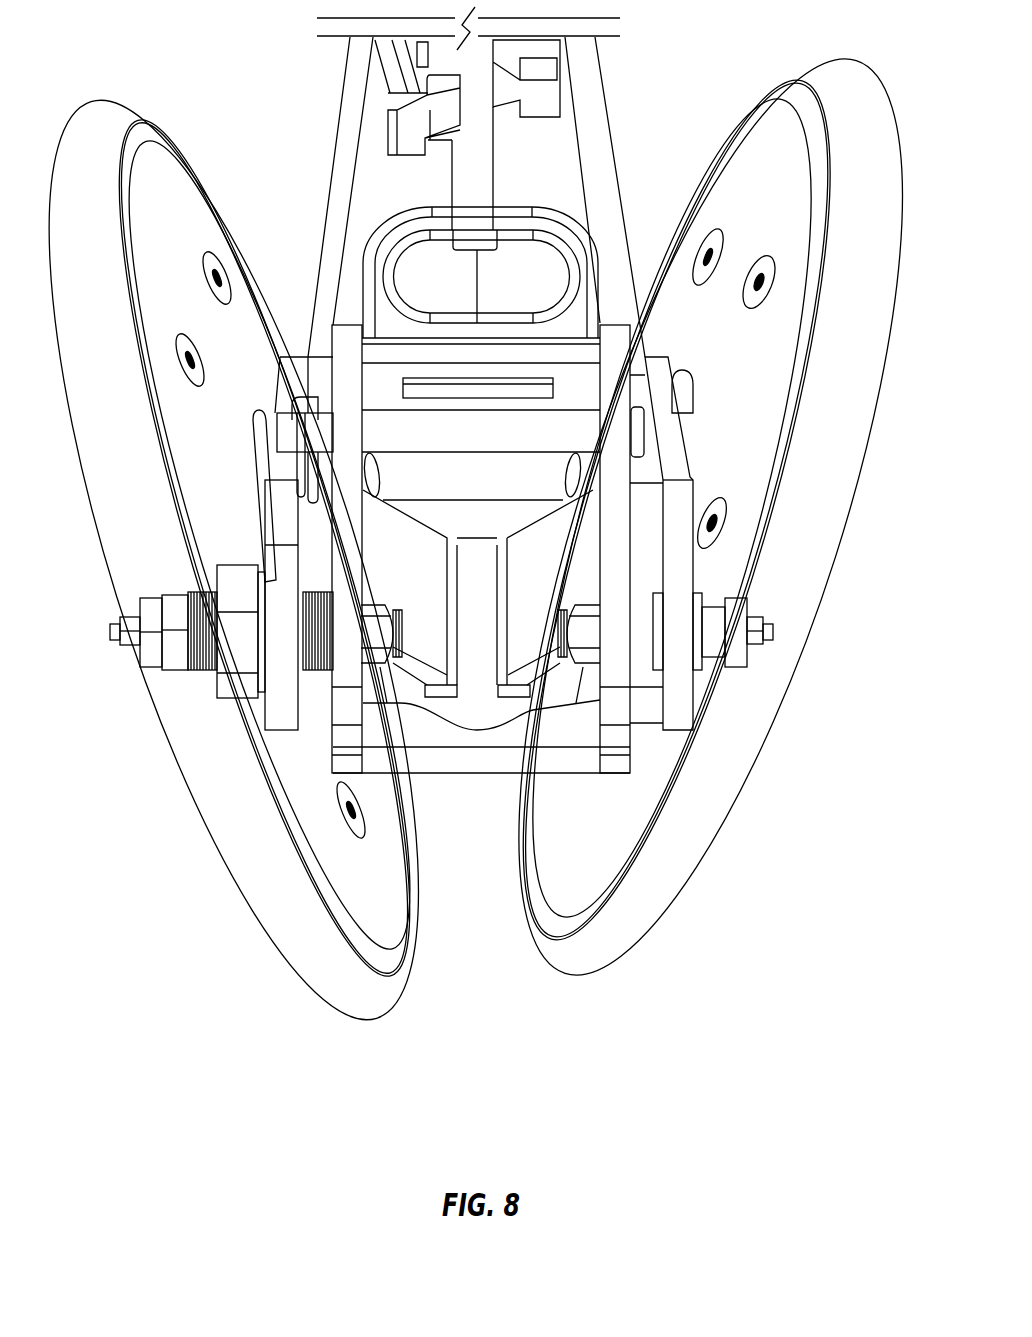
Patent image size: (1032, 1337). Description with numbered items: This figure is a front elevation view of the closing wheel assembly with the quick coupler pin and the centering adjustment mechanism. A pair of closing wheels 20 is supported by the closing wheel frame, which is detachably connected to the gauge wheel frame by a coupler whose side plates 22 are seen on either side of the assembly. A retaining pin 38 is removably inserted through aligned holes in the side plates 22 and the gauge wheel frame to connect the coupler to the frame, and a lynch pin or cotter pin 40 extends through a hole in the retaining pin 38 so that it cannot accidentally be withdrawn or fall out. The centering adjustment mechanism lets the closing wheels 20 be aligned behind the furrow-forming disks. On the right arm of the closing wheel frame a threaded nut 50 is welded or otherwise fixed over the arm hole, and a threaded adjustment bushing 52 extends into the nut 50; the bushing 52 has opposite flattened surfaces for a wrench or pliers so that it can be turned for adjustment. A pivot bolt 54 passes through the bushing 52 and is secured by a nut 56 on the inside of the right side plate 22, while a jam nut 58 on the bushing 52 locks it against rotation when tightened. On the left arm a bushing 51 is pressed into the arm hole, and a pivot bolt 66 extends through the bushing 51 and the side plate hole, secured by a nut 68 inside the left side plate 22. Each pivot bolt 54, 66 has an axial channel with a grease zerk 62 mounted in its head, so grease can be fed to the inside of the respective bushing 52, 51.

The closing wheels 20 is at (100, 115).
The side plates 22 is at (358, 540).
The retaining pin 38 is at (455, 440).
The lynch pin or cotter pin 40 is at (318, 472).
The threaded nut 50 is at (262, 580).
The bushing 51 is at (697, 597).
The threaded adjustment bushing 52 is at (200, 668).
The pivot bolt 54 is at (148, 662).
The nut 56 is at (378, 605).
The jam nut 58 is at (232, 585).
The grease zerk 62 is at (110, 630).
The pivot bolt 66 is at (735, 605).
The nut 68 is at (588, 606).